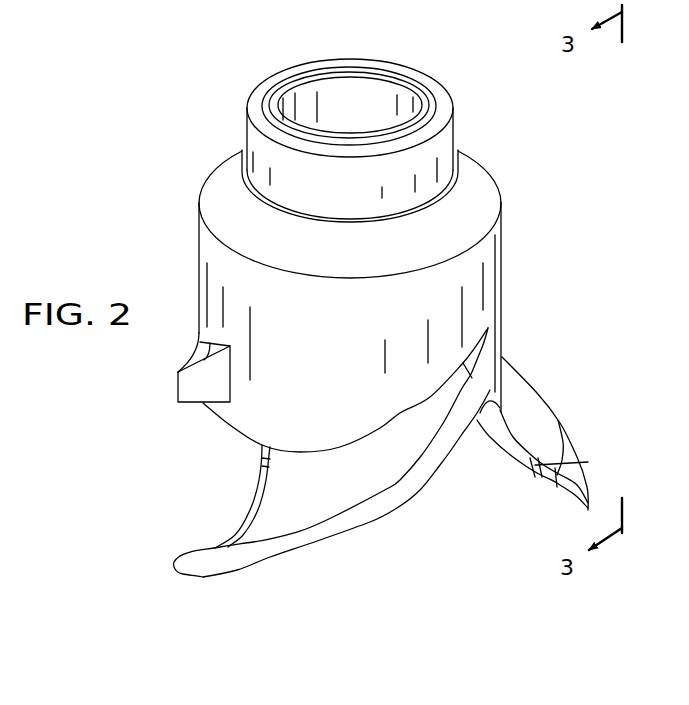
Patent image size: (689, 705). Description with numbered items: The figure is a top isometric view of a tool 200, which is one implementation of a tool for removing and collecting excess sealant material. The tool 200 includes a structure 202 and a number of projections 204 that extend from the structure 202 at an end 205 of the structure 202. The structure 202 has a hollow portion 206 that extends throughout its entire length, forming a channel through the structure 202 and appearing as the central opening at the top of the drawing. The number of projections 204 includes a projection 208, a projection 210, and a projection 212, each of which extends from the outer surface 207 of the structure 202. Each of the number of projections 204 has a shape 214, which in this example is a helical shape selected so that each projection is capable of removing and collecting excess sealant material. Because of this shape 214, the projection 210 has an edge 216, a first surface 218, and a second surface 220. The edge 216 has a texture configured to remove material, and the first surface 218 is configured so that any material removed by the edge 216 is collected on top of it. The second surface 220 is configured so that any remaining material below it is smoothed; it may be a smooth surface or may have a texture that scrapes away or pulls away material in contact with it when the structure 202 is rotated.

The tool 200 is at (538, 135).
The structure 202 is at (501, 249).
The number of projections 204 is at (523, 367).
The end 205 is at (222, 430).
The hollow portion 206 is at (337, 100).
The outer surface 207 is at (198, 255).
The projection 208 is at (559, 420).
The projection 210 is at (386, 510).
The projection 212 is at (178, 390).
The shape 214 is at (403, 456).
The edge 216 is at (257, 497).
The first surface 218 is at (313, 517).
The second surface 220 is at (283, 566).